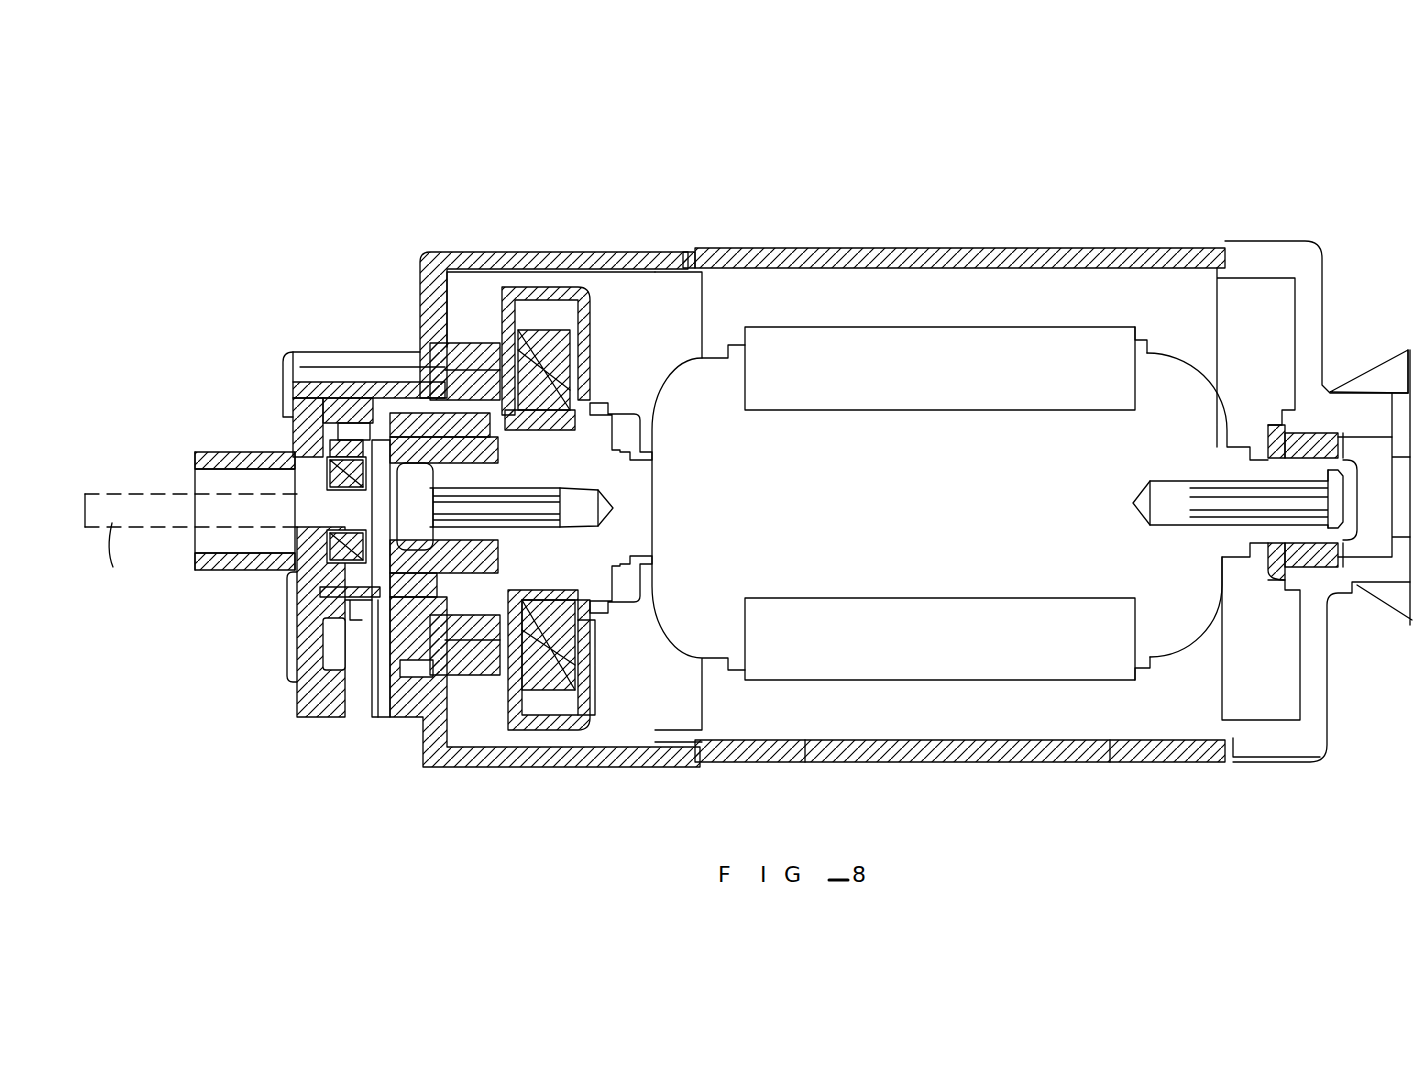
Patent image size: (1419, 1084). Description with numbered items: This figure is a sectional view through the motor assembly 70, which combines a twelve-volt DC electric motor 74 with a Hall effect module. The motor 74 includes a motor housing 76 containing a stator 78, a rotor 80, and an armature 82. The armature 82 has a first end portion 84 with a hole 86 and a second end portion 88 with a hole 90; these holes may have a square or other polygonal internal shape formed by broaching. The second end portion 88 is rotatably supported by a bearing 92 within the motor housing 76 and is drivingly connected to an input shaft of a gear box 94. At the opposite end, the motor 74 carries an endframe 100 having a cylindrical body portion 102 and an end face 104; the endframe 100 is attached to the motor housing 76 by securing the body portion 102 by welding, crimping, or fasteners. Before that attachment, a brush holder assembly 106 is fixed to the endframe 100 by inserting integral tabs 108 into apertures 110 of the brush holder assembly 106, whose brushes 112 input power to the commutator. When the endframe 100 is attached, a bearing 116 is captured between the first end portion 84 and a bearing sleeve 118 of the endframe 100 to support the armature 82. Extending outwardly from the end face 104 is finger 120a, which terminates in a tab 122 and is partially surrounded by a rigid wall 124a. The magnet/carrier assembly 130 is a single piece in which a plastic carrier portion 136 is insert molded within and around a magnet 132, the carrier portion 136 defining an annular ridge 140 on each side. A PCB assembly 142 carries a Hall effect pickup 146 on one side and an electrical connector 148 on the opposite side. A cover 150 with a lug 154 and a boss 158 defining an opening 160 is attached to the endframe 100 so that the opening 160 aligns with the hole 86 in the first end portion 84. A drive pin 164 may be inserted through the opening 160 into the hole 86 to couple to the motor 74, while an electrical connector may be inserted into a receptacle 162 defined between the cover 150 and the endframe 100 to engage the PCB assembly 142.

The motor assembly 70 is at (1068, 188).
The electric motor 74 is at (835, 245).
The motor housing 76 is at (925, 250).
The stator 78 is at (1076, 306).
The rotor 80 is at (1040, 378).
The armature 82 is at (840, 518).
The first end portion 84 is at (596, 474).
The hole 86 is at (600, 514).
The second end portion 88 is at (1260, 460).
The hole 90 is at (1195, 508).
The bearing 92 is at (1266, 572).
The gear box 94 is at (1383, 377).
The endframe 100 is at (514, 246).
The cylindrical body portion 102 is at (563, 252).
The end face 104 is at (405, 360).
The brush holder assembly 106 is at (598, 300).
The integral tabs 108 is at (475, 355).
The apertures 110 is at (540, 365).
The brushes 112 is at (560, 657).
The bearing 116 is at (470, 465).
The bearing sleeve 118 is at (455, 425).
The finger 120a is at (348, 380).
The tabs 122 is at (313, 393).
The rigid wall 124a is at (372, 350).
The magnet/carrier assembly 130 is at (312, 505).
The magnet 132 is at (322, 562).
The carrier portion 136 is at (290, 529).
The annular ridge 140 is at (290, 450).
The PCB assembly 142 is at (355, 618).
The Hall effect pickup 146 is at (337, 556).
The electrical connector 148 is at (366, 612).
The cover 150 is at (274, 626).
The lug 154 is at (313, 407).
The boss 158 is at (222, 452).
The opening 160 is at (227, 472).
The receptacle 162 is at (367, 718).
The drive pin 164 is at (121, 558).